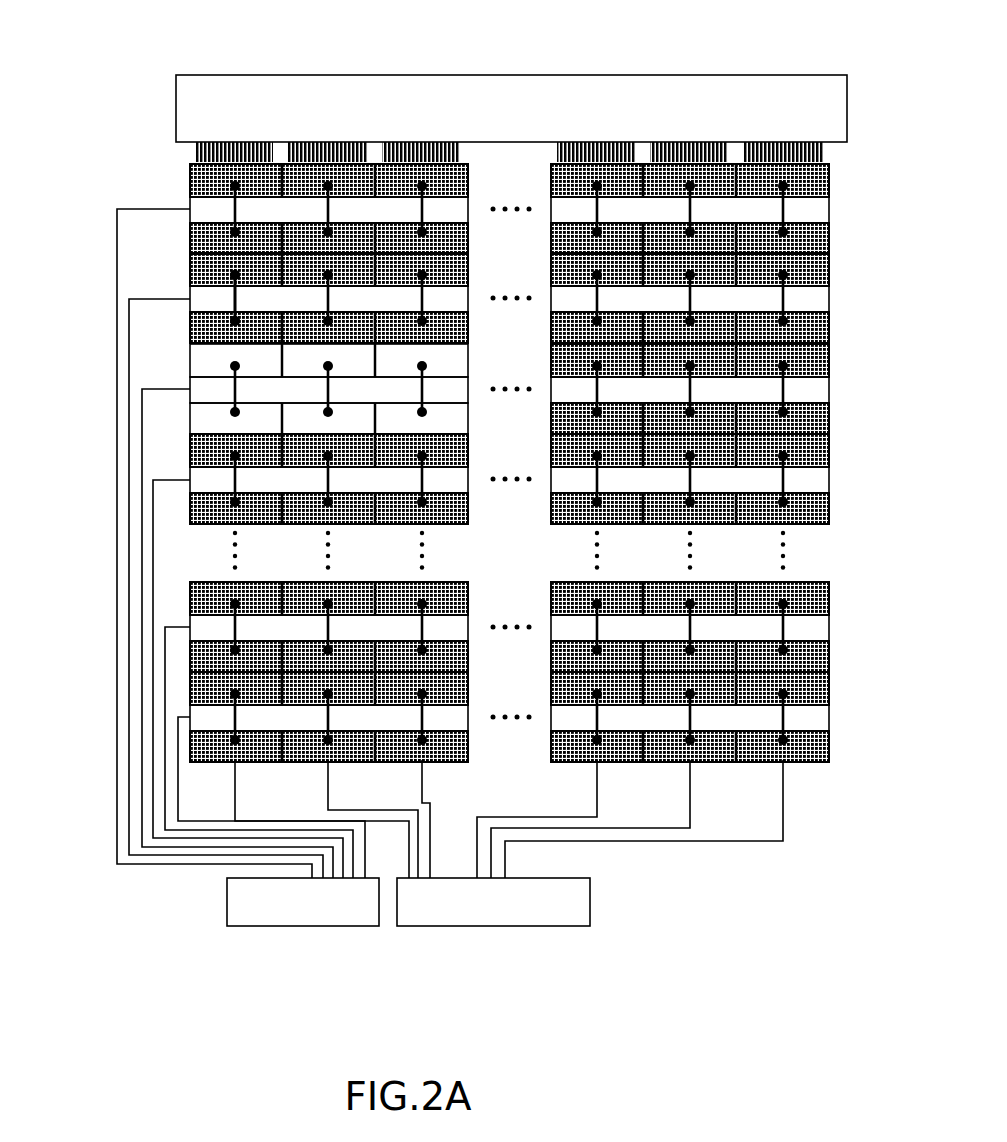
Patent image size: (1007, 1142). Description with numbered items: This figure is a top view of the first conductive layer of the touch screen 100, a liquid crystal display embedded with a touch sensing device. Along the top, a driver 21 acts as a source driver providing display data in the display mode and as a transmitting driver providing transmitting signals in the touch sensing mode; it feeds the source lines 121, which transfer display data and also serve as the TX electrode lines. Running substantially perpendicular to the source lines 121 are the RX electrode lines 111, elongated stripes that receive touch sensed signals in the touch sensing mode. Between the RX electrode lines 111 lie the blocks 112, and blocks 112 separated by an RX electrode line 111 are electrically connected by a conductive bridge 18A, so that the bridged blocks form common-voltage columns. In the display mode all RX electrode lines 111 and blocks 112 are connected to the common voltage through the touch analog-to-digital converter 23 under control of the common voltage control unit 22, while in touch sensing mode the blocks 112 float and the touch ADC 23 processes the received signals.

The touch screen 100 is at (78, 28).
The driver 21 is at (176, 105).
The source lines 121 is at (195, 152).
The RX electrode lines 111 is at (203, 202).
The blocks 112 is at (190, 238).
The conductive bridge 18A is at (233, 293).
The common voltage control unit 22 is at (490, 927).
The touch analog-to-digital converter 23 is at (301, 927).